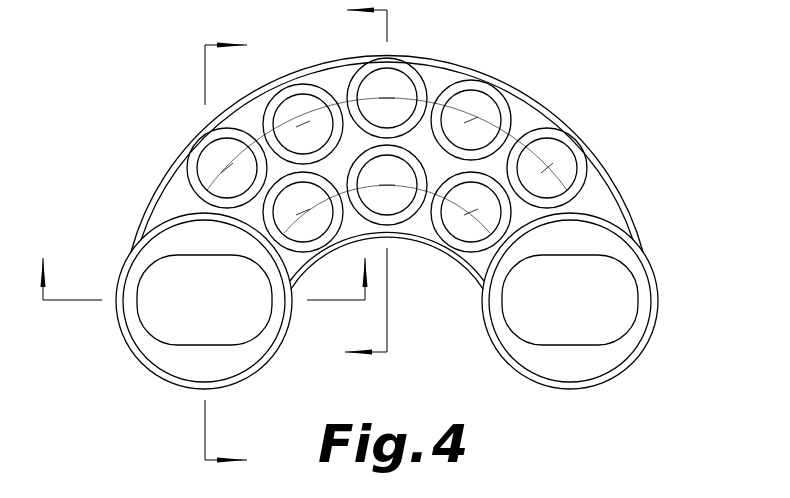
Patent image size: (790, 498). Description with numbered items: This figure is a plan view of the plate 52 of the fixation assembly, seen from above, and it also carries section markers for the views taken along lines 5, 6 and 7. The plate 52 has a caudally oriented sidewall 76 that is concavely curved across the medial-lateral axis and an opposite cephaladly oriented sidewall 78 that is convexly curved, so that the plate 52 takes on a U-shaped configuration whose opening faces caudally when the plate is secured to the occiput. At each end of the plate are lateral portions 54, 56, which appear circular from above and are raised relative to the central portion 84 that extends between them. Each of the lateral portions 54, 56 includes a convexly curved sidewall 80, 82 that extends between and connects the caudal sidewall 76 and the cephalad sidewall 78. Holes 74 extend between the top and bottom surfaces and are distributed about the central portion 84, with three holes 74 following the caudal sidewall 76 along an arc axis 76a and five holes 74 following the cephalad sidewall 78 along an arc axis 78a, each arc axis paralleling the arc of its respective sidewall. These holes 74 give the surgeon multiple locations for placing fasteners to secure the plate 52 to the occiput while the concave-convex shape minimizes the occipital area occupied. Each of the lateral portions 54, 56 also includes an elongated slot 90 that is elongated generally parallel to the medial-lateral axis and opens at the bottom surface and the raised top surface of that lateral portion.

The plate 52 is at (536, 55).
The lateral portion 54 is at (122, 263).
The lateral portion 56 is at (636, 260).
The holes 74 is at (470, 105).
The caudal sidewall 76 is at (418, 247).
The arc axis 76a is at (467, 210).
The cephalad sidewall 78 is at (408, 53).
The arc axis 78a is at (228, 166).
The convexly curved sidewall 80 is at (133, 350).
The convexly curved sidewall 82 is at (643, 356).
The central portion 84 is at (535, 117).
The elongated slot 90 is at (175, 334).
The section line 5- 5 is at (204, 298).
The section line 6- 6 is at (235, 255).
The section line 7- 7 is at (358, 184).